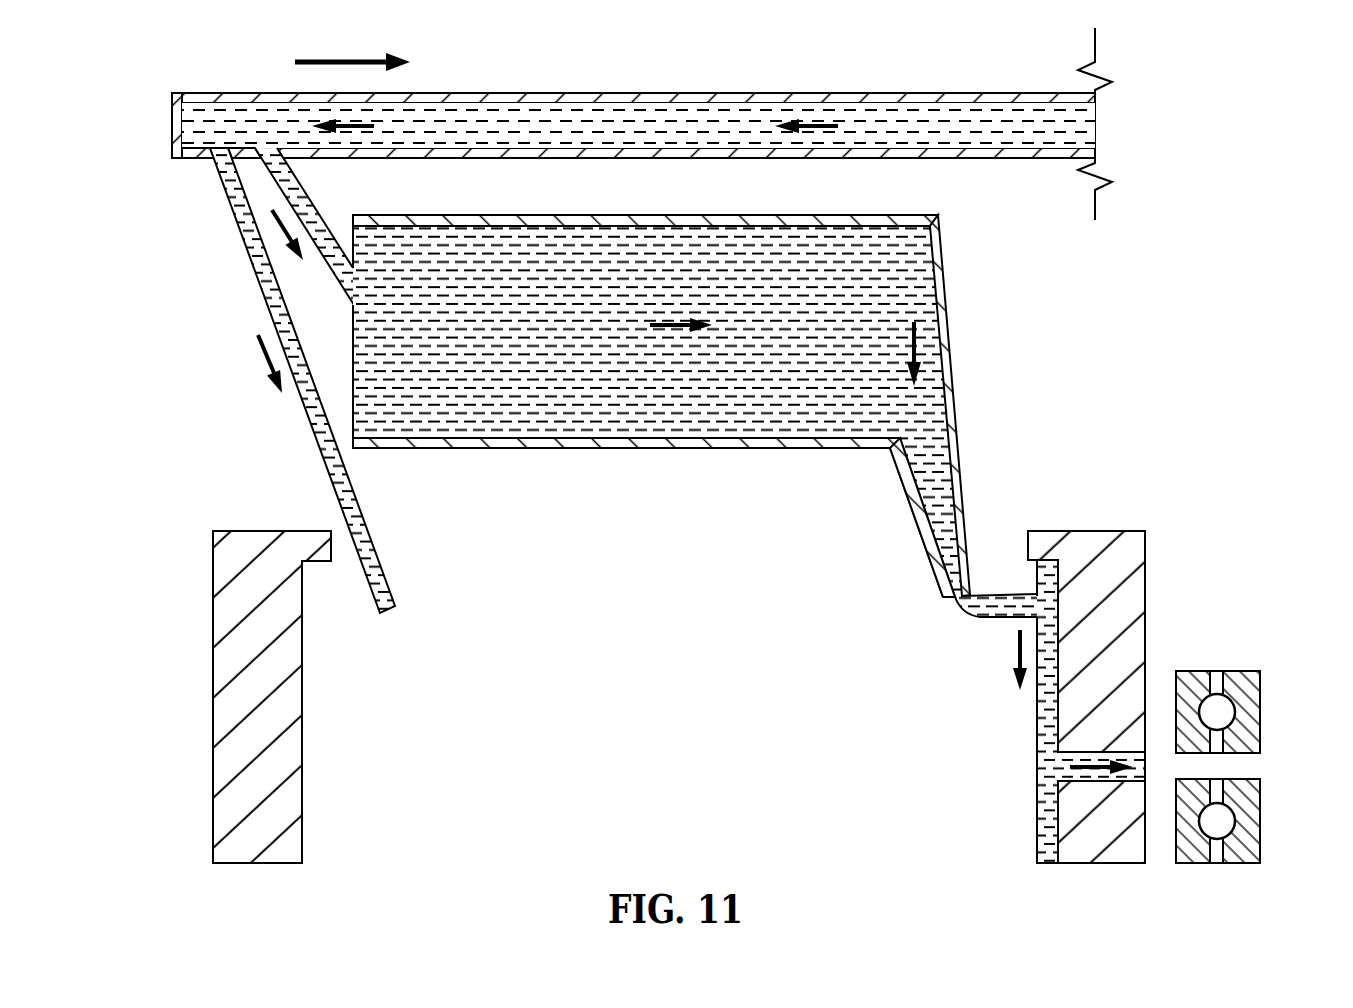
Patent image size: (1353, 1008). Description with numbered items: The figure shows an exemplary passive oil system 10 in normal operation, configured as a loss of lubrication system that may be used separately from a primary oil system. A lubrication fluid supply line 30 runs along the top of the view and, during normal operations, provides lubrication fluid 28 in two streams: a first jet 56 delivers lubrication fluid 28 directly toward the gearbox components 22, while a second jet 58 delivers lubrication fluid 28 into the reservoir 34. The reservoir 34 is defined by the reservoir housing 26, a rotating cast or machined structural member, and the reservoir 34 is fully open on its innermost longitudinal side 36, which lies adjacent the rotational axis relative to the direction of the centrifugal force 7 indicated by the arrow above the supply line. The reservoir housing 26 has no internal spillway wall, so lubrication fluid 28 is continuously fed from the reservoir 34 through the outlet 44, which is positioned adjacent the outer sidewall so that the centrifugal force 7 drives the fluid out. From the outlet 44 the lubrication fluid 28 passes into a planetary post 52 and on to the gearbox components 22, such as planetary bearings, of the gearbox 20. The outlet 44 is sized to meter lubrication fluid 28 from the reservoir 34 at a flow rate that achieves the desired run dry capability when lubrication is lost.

The centrifugal force 7 is at (341, 60).
The passive oil system 10 is at (1224, 100).
The gearbox 20 is at (1187, 124).
The gearbox components 22 is at (1250, 701).
The reservoir housing 26 is at (956, 287).
The lubrication fluid 28 is at (306, 196).
The lubrication fluid supply line 30 is at (690, 93).
The reservoir 34 is at (549, 347).
The innermost longitudinal side 36 is at (228, 326).
The outlet 44 is at (945, 525).
The planetary post 52 is at (222, 666).
The first jet 56 is at (223, 153).
The second jet 58 is at (256, 148).